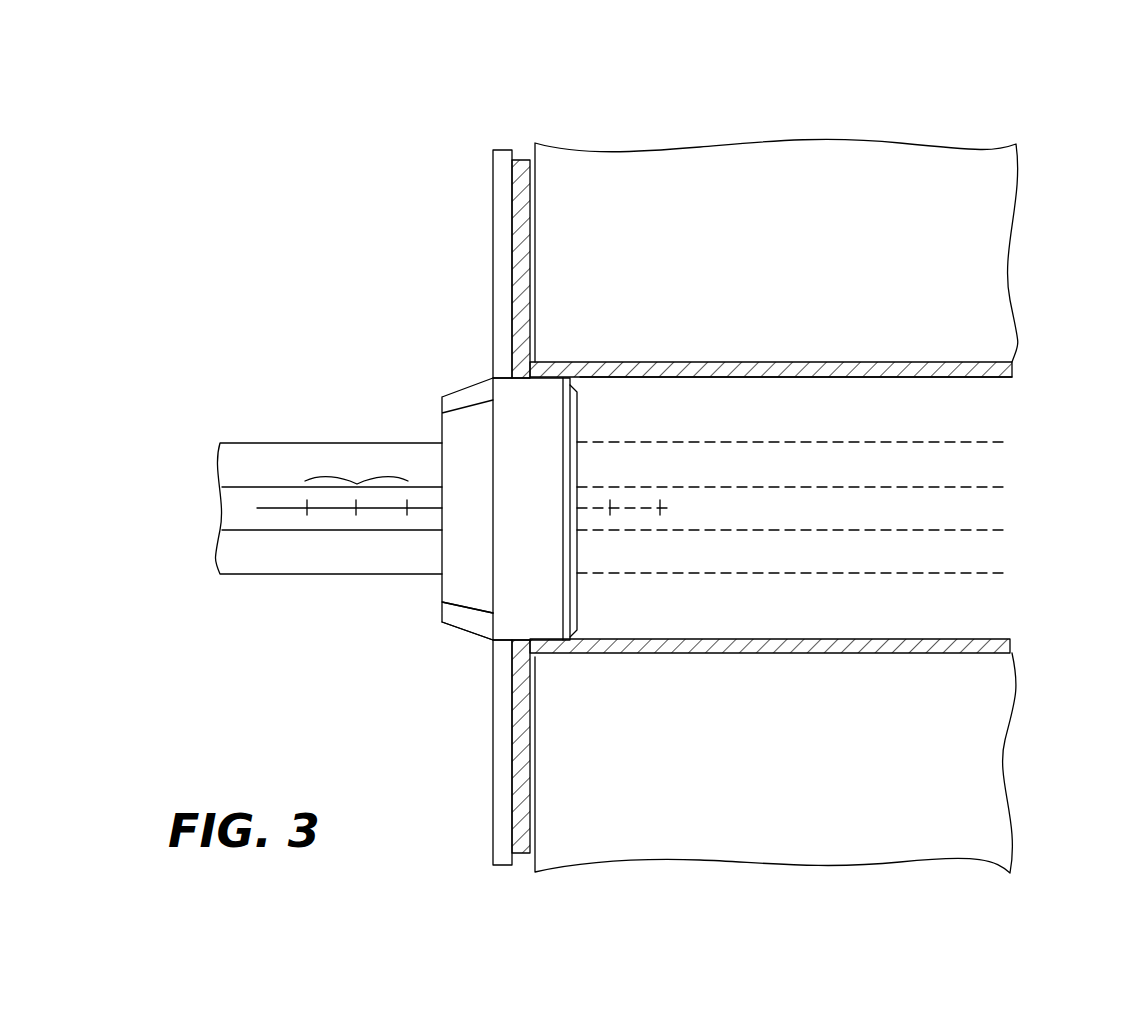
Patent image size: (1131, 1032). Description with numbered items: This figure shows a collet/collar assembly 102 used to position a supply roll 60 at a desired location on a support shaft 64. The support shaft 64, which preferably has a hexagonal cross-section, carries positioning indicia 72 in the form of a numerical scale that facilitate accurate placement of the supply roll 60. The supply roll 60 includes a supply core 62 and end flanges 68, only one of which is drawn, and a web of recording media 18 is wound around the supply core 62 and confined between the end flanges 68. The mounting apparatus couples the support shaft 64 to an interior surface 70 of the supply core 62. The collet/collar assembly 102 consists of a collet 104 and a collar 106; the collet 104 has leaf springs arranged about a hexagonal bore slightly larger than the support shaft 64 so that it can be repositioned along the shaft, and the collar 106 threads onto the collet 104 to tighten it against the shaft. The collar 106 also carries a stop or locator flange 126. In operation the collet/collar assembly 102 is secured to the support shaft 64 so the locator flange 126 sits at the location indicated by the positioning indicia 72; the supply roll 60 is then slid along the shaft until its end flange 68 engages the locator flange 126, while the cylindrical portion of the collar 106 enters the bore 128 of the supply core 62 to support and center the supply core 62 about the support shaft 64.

The recording media 18 is at (602, 160).
The supply roll 60 is at (436, 130).
The supply core 62 is at (1008, 370).
The support shaft 64 is at (238, 576).
The end flange 68 is at (520, 165).
The interior surface 70 is at (975, 378).
The positioning indicia 72 is at (356, 478).
The collet/collar assembly 102 is at (460, 372).
The collet 104 is at (589, 412).
The collar 106 is at (452, 633).
The locator flange 126 is at (505, 162).
The bore 128 is at (997, 610).